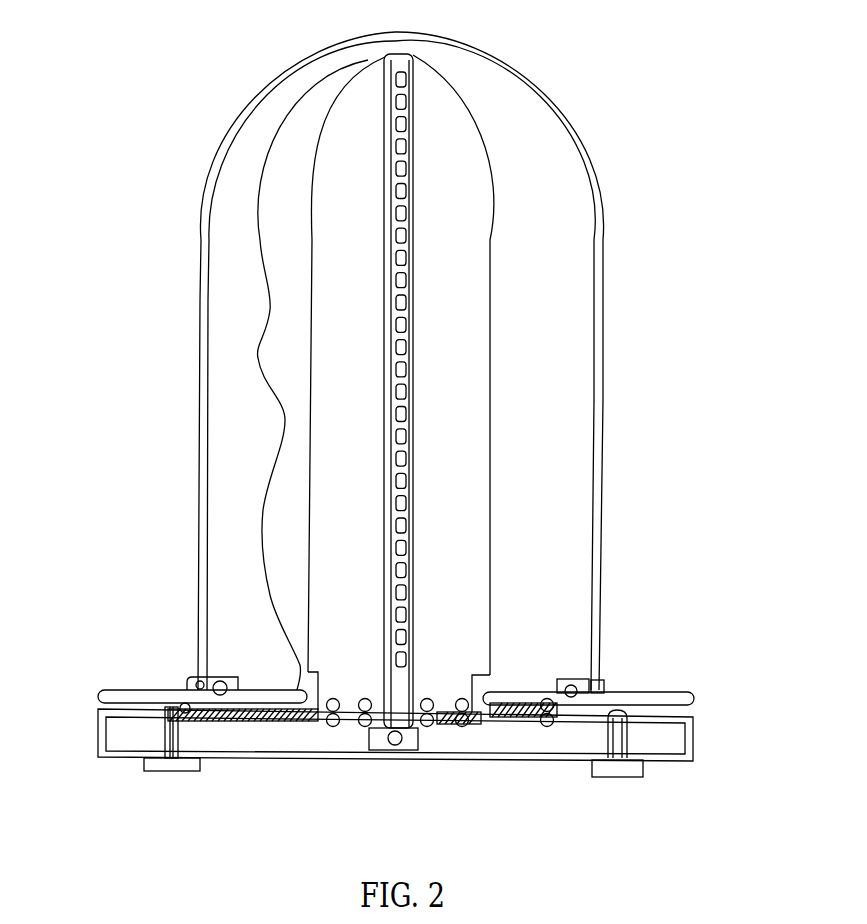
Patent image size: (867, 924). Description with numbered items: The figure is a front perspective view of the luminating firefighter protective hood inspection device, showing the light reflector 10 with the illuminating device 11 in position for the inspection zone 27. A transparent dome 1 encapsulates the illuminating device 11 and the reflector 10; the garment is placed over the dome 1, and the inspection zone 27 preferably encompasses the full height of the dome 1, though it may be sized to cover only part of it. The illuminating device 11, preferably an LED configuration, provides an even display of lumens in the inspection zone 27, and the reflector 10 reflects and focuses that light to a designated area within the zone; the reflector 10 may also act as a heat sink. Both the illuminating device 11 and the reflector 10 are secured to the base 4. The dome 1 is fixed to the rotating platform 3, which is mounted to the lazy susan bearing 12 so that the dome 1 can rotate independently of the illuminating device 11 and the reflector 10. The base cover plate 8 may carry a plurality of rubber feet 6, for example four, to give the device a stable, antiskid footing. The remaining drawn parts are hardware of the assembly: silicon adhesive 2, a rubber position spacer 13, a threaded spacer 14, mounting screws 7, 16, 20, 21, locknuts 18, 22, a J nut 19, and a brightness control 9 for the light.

The transparent dome 1 is at (600, 165).
The silicon adhesive 2 is at (605, 682).
The platform 3 is at (697, 698).
The base 4 is at (695, 722).
The rubber foot 6 is at (588, 777).
The mounting screw 7 is at (627, 777).
The base cover plate 8 is at (374, 752).
The brightness control 9 is at (419, 750).
The light reflector 10 is at (477, 295).
The illuminating device 11 is at (403, 427).
The lazy susan bearing 12 is at (299, 658).
The rubber position spacer 13 is at (218, 676).
The threaded spacer 14 is at (163, 733).
The mounting screws 16 is at (485, 685).
The locknut 18 is at (467, 727).
The J nut 19 is at (232, 723).
The mounting screw 20 is at (252, 727).
The mounting screw 21 is at (215, 688).
The locknut 22 is at (182, 698).
The inspection zone 27 is at (259, 355).